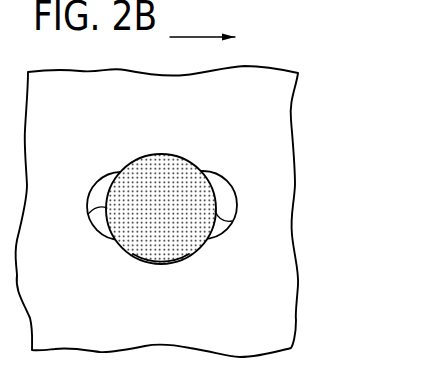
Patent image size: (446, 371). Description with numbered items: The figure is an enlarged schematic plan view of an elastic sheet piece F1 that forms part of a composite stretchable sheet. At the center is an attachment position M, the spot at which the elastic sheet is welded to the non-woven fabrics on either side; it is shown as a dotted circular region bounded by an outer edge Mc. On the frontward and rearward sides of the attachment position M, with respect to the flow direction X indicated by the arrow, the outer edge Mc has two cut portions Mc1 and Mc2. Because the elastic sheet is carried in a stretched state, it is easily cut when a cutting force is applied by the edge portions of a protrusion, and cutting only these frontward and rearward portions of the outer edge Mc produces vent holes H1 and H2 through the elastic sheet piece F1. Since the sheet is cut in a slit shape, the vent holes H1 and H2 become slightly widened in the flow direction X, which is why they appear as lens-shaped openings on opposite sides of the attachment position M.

The elastic sheet piece F1 is at (268, 113).
The attachment position M is at (160, 170).
The vent hole H1 is at (220, 188).
The vent hole H2 is at (100, 192).
The outer edge Mc is at (172, 263).
The cut portion Mc1 is at (232, 222).
The cut portion Mc2 is at (89, 214).
The flow direction X is at (187, 34).